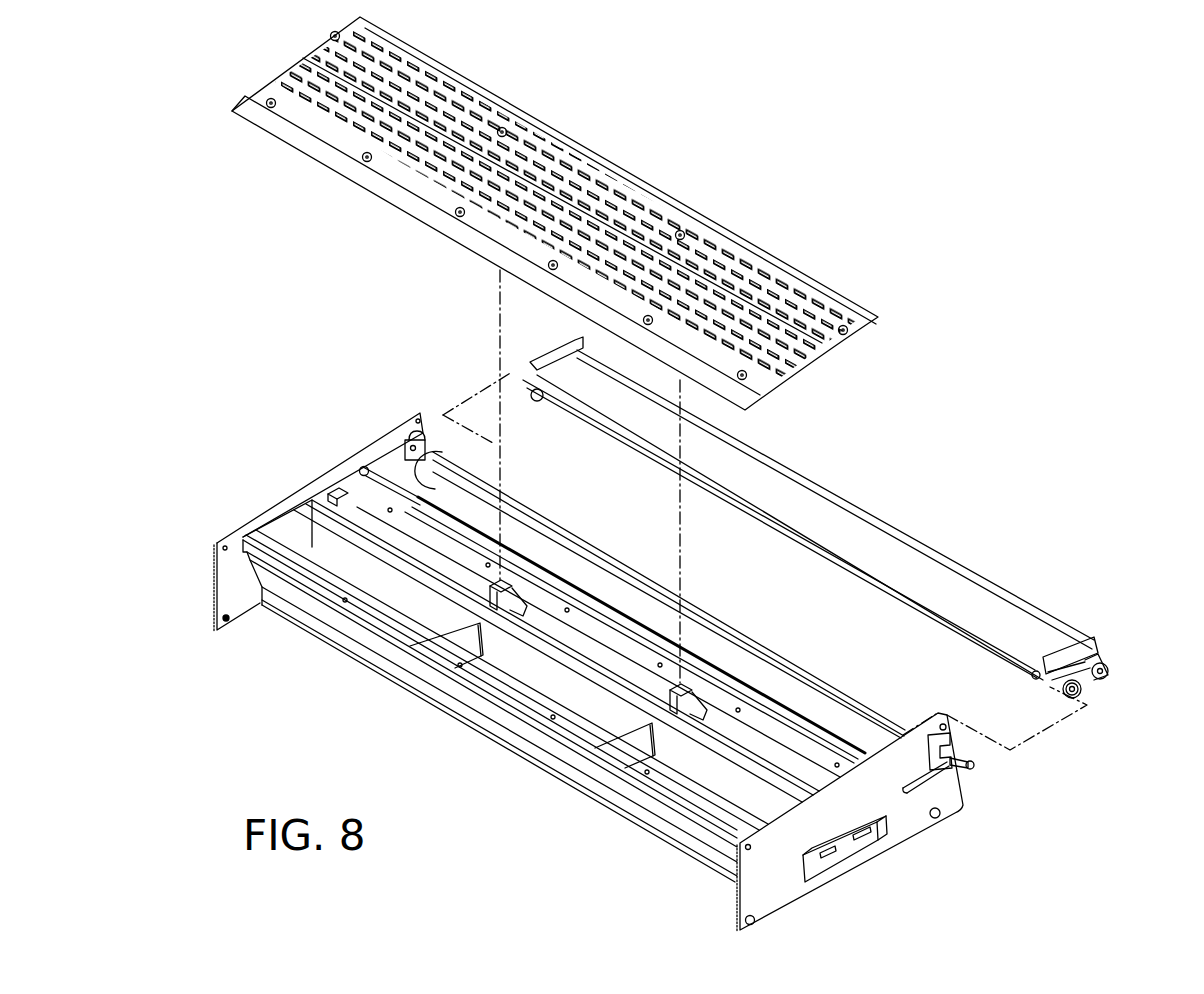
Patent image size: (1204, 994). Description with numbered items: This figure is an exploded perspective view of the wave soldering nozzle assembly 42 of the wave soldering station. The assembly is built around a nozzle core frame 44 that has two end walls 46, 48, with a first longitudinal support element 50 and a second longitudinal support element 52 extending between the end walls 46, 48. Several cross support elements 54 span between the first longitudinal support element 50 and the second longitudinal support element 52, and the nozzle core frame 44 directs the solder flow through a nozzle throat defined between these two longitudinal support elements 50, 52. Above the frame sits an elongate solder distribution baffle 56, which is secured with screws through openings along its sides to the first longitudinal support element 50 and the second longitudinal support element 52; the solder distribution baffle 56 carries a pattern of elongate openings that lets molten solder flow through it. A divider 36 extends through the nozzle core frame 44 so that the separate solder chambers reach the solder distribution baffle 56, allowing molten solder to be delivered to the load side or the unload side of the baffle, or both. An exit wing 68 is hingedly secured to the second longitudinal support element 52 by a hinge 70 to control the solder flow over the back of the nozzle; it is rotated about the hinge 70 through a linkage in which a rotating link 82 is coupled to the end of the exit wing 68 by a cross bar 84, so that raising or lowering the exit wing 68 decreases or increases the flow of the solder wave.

The divider 36 is at (605, 707).
The wave soldering nozzle assembly 42 is at (869, 166).
The nozzle core frame 44 is at (260, 605).
The end wall 46 is at (333, 472).
The end wall 48 is at (893, 818).
The first longitudinal support element 50 is at (378, 648).
The second longitudinal support element 52 is at (717, 698).
The cross support element 54 is at (472, 648).
The solder distribution baffle 56 is at (528, 147).
The exit wing 68 is at (820, 502).
The hinge 70 is at (617, 435).
The rotating link 82 is at (1088, 683).
The cross bar 84 is at (1047, 693).